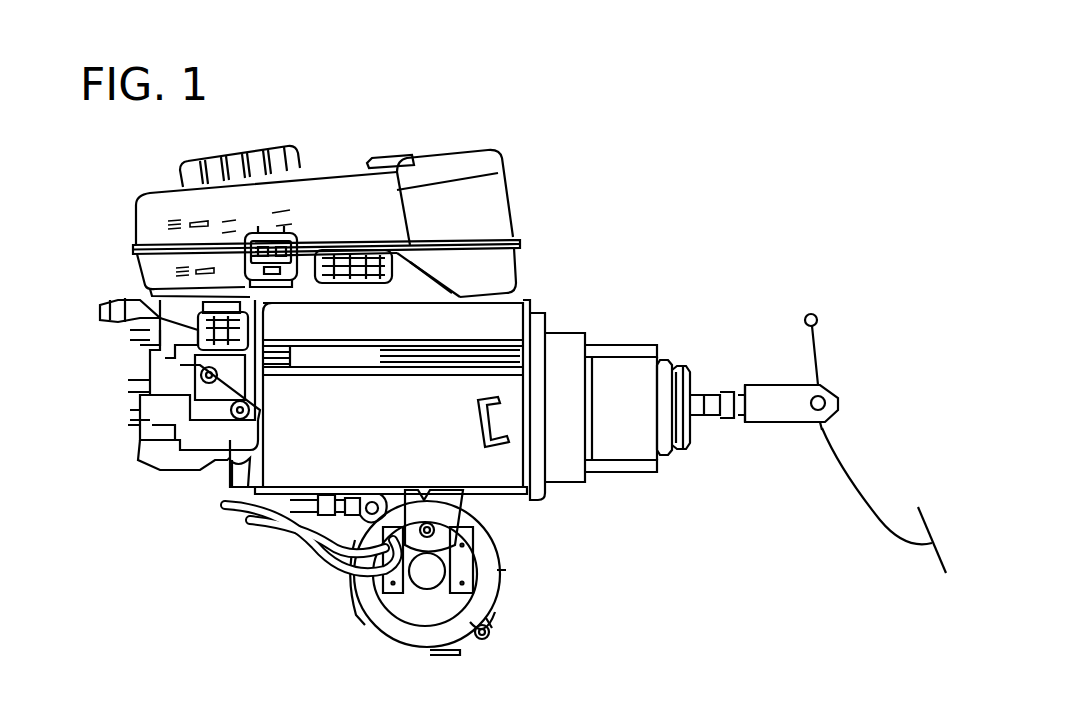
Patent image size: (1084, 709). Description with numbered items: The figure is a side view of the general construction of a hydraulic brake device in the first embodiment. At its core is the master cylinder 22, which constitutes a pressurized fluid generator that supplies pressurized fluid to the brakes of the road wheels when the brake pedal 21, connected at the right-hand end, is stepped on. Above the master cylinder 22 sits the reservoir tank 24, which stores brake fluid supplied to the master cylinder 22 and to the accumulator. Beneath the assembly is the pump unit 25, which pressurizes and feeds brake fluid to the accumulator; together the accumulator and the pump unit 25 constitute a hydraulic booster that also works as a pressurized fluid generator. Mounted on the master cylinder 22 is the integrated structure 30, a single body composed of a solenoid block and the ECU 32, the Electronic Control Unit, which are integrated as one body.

The brake pedal 21 is at (838, 441).
The master cylinder 22 is at (545, 333).
The reservoir tank 24 is at (328, 172).
The pump unit 25 is at (494, 568).
The integrated structure 30 is at (405, 293).
The ECU 32 is at (460, 455).